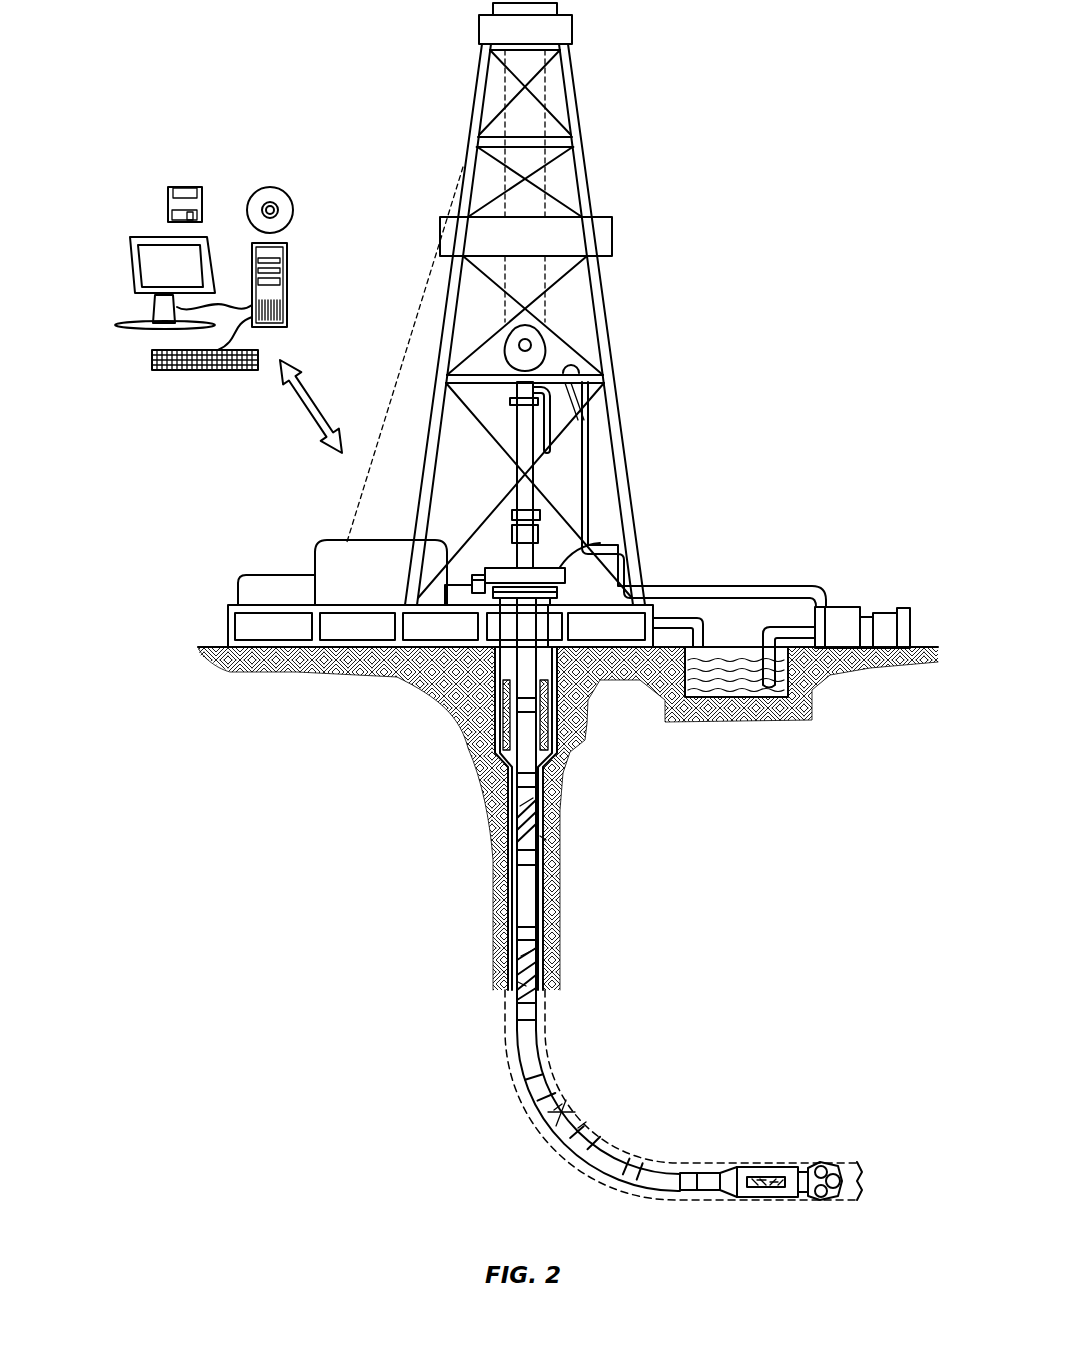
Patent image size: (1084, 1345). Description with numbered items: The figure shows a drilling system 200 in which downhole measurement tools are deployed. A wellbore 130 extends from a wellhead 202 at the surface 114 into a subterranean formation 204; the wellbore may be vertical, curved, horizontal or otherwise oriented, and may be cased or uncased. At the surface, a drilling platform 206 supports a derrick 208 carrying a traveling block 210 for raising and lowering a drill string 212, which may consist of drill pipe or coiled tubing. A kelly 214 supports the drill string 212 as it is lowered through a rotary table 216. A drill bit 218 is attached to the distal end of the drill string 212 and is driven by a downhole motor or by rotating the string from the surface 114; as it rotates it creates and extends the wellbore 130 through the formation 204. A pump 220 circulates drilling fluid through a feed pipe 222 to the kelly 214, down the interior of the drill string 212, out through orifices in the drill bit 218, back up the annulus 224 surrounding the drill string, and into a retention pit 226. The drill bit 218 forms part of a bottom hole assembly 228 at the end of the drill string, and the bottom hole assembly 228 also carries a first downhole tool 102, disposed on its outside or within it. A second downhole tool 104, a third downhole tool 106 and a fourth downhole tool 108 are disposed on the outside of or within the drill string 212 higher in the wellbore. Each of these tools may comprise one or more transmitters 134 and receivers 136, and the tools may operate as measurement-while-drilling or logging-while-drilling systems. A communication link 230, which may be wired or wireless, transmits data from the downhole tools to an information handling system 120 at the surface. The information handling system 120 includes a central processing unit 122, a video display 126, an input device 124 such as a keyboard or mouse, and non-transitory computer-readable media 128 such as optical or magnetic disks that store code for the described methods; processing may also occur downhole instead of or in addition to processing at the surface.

The first downhole tool 102 is at (767, 1187).
The second downhole tool 104 is at (558, 1130).
The third downhole tool 106 is at (528, 972).
The fourth downhole tool 108 is at (515, 817).
The surface 114 is at (925, 647).
The information handling system 120 is at (203, 289).
The central processing unit 122 is at (288, 253).
The input device 124 is at (163, 372).
The video display 126 is at (133, 275).
The non-transitory computer-readable media 128 is at (263, 192).
The wellbore 130 is at (540, 855).
The transmitter 134 is at (533, 805).
The receiver 136 is at (545, 835).
The drilling system 200 is at (845, 109).
The wellhead 202 is at (575, 592).
The subterranean formation 204 is at (772, 943).
The drilling platform 206 is at (228, 628).
The derrick 208 is at (585, 157).
The traveling block 210 is at (547, 347).
The drill string 212 is at (538, 823).
The kelly 214 is at (527, 431).
The rotary table 216 is at (560, 562).
The drill bit 218 is at (823, 1165).
The pump 220 is at (843, 607).
The feed pipe 222 is at (765, 586).
The annulus 224 is at (507, 848).
The retention pit 226 is at (730, 683).
The bottom hole assembly 228 is at (730, 1167).
The communication link 230 is at (303, 410).